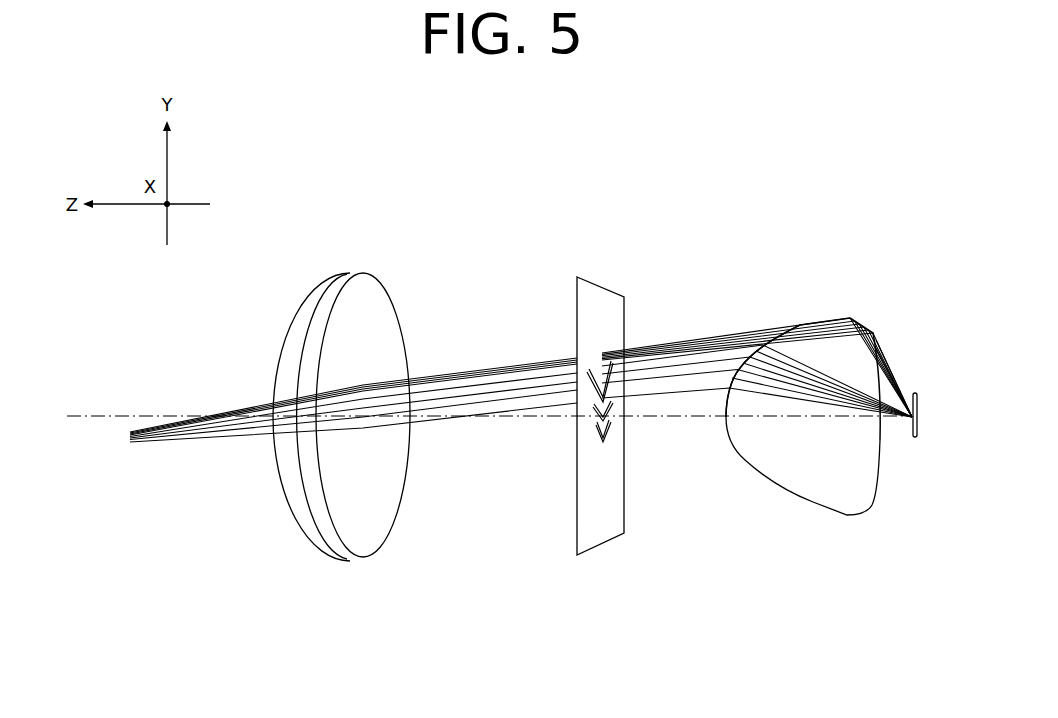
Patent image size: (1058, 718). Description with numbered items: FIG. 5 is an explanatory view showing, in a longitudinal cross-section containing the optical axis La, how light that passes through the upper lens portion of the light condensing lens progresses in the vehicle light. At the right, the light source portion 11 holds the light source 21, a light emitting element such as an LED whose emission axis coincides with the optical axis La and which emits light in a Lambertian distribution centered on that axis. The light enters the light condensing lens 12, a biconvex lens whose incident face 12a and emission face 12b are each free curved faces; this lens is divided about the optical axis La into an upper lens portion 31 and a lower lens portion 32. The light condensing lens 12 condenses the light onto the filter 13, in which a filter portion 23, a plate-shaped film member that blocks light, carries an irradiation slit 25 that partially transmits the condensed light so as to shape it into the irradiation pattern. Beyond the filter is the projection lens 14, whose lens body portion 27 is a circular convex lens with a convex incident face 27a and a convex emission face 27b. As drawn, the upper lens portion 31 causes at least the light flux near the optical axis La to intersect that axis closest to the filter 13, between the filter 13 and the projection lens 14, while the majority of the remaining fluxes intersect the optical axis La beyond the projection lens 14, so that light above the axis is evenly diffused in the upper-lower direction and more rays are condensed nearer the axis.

The optical axis La is at (112, 414).
The projection lens 14 is at (345, 361).
The lens body portion 27 is at (345, 361).
The incident face 27a is at (382, 314).
The emission face 27b is at (295, 326).
The filter 13 is at (615, 359).
The filter portion 23 is at (615, 359).
The irradiation slit 25 is at (598, 323).
The light source portion 11 is at (834, 367).
The light condensing lens 12 is at (806, 367).
The incident face 12a is at (882, 330).
The emission face 12b is at (757, 333).
The upper lens portion 31 is at (775, 403).
The lower lens portion 32 is at (838, 473).
The light source 21 is at (912, 420).